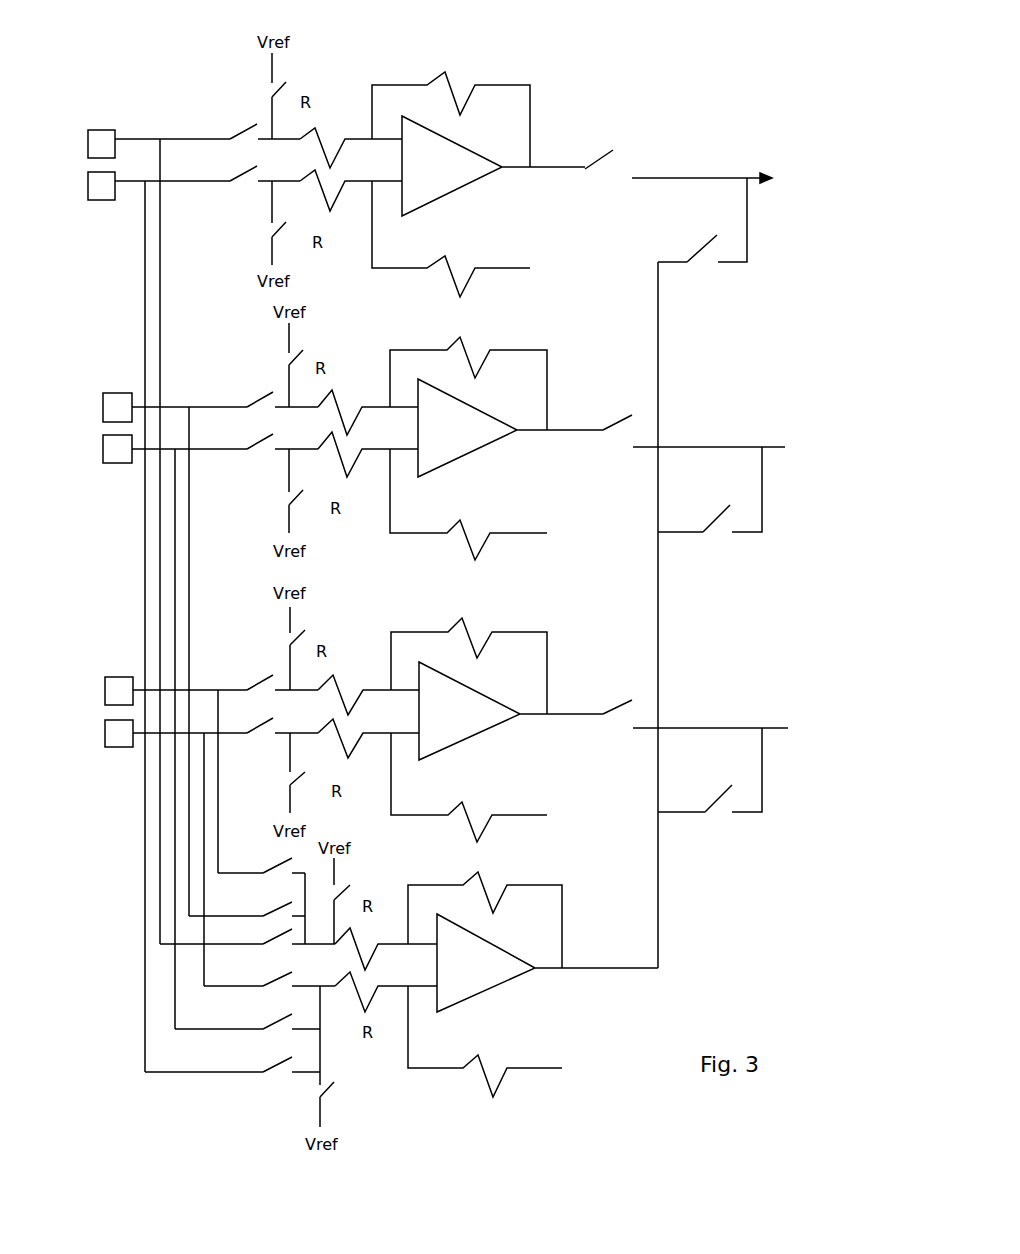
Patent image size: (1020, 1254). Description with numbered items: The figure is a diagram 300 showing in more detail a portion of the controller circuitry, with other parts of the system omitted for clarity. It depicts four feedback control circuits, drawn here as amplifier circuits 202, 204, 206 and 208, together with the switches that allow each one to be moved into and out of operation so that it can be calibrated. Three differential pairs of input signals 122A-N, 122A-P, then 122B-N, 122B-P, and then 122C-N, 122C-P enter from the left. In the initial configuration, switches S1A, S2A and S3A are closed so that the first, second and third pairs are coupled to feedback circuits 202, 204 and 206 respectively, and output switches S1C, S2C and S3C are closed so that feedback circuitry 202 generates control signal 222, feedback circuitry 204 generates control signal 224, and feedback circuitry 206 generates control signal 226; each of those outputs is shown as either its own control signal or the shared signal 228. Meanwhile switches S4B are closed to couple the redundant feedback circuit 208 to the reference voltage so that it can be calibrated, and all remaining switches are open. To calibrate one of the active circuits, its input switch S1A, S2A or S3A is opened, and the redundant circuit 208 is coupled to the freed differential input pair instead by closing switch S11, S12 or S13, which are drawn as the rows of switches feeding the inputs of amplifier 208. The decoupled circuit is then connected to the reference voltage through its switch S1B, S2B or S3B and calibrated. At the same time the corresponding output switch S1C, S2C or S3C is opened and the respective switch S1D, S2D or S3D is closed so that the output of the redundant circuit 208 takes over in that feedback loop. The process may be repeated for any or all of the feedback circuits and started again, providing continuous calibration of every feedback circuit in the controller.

The diagram 300 is at (780, 50).
The feedback control circuit 202 is at (558, 112).
The feedback control circuit 204 is at (553, 356).
The feedback control circuit 206 is at (567, 652).
The redundant feedback circuit 208 is at (573, 892).
The control signal 222 is at (753, 178).
The control signal 224 is at (745, 446).
The control signal 226 is at (748, 741).
The shared fourth amplifier output 228 is at (753, 465).
The differential pair input signal 122A-N is at (64, 144).
The differential pair input signal 122A-P is at (64, 186).
The differential pair input signal 122B-N is at (81, 407).
The differential pair input signal 122B-P is at (81, 449).
The differential pair input signal 122C-N is at (83, 691).
The differential pair input signal 122C-P is at (83, 733).
The switch S1A is at (246, 145).
The switch S1B is at (274, 159).
The switch S1C is at (601, 177).
The switch S1D is at (702, 233).
The switch S2A is at (265, 413).
The switch S2B is at (292, 428).
The switch S2C is at (607, 438).
The switch S2D is at (710, 504).
The switch S3A is at (272, 697).
The switch S3B is at (294, 710).
The switch S3C is at (610, 721).
The switch S3D is at (710, 784).
The switch S4B is at (352, 992).
The switch S11 is at (240, 1000).
The switch S12 is at (247, 961).
The switch S13 is at (269, 918).